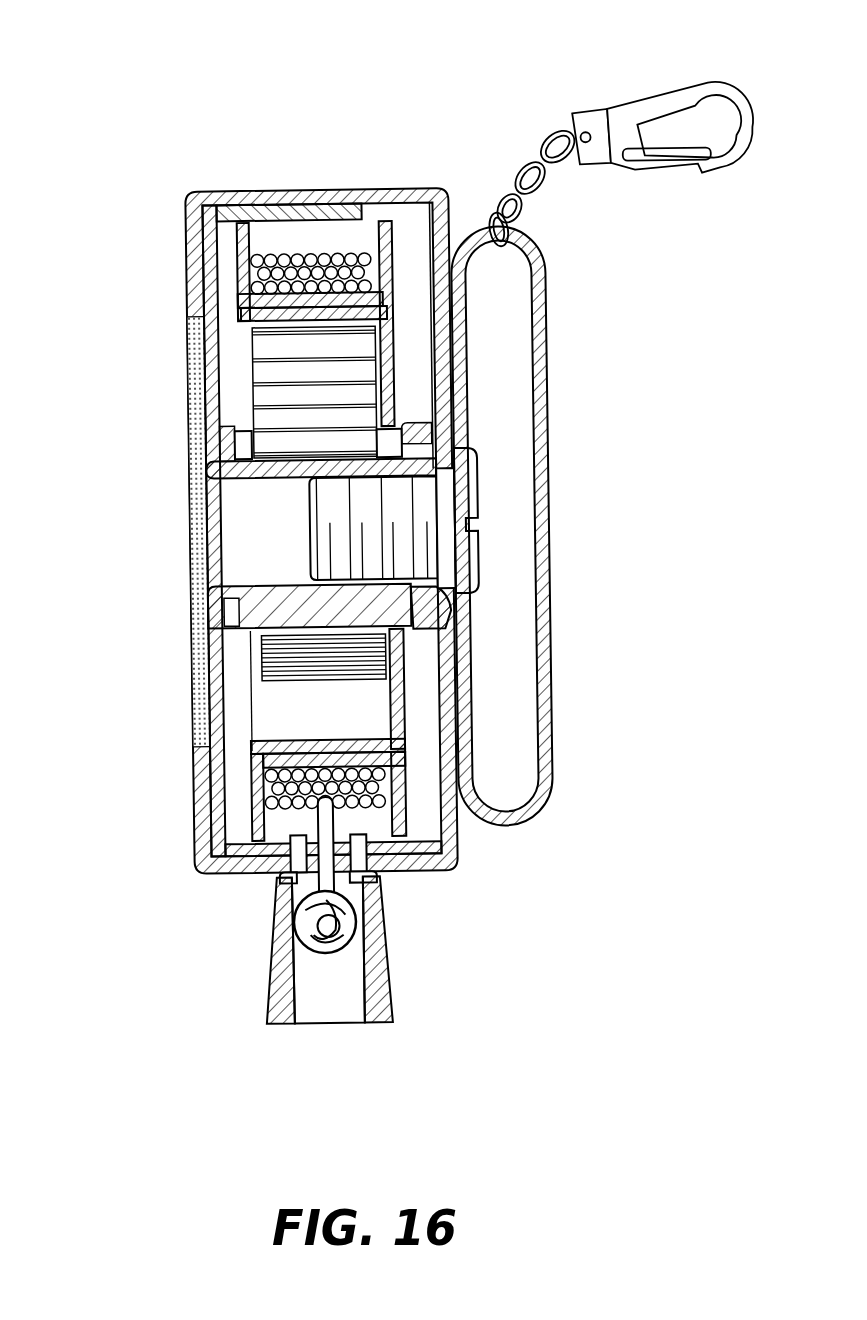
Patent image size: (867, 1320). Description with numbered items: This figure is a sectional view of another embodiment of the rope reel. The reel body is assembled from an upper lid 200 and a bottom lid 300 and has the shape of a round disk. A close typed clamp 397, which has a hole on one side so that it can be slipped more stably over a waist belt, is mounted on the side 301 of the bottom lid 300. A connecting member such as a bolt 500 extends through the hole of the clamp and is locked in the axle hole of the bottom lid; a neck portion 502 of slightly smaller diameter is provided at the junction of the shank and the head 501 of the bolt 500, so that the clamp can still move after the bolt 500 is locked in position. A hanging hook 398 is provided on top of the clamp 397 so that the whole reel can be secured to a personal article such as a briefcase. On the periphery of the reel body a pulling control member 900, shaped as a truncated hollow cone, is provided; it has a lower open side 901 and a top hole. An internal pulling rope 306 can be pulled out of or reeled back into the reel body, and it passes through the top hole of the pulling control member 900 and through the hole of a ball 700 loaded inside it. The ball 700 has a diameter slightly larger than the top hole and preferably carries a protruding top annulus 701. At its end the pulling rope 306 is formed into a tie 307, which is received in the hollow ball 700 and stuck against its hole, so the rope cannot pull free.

The upper lid 200 is at (222, 190).
The bottom lid 300 is at (380, 190).
The side of the bottom lid 301 is at (450, 218).
The close typed clamp 397 is at (547, 327).
The hanging hook 398 is at (695, 98).
The bolt 500 is at (327, 527).
The head of the bolt 501 is at (443, 540).
The neck portion 502 is at (498, 673).
The pulling rope 306 is at (317, 840).
The tie 307 is at (330, 930).
The ball 700 is at (277, 917).
The protruding top annulus 701 is at (377, 882).
The pulling control member 900 is at (393, 982).
The lower open side 901 is at (328, 1007).